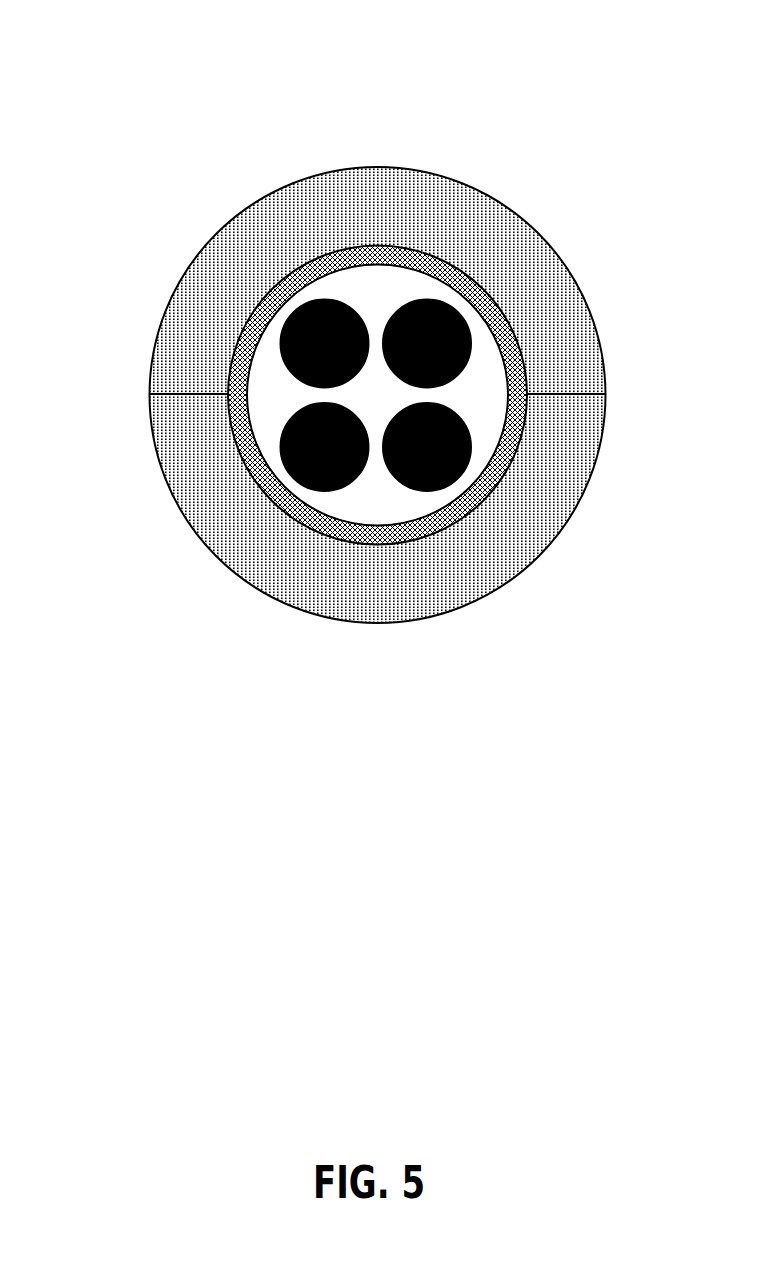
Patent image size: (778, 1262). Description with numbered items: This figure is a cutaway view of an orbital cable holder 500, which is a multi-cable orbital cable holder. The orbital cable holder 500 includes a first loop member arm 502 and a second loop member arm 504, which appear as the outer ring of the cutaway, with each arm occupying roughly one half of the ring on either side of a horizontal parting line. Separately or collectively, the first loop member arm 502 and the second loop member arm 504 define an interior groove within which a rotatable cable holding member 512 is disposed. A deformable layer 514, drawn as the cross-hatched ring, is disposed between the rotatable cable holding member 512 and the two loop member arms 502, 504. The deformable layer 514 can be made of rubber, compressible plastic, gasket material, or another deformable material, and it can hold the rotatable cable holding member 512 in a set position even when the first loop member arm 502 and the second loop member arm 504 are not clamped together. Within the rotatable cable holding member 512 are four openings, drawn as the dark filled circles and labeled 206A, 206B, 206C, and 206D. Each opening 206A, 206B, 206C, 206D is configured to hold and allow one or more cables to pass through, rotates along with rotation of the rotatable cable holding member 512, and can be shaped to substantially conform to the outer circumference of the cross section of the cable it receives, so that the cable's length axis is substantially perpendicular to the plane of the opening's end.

The orbital cable holder 500 is at (153, 93).
The first loop member arm 502 is at (508, 216).
The second loop member arm 504 is at (493, 583).
The deformable layer 514 is at (233, 342).
The rotatable cable holding member 512 is at (262, 432).
The conductor 206A is at (300, 306).
The conductor 206B is at (305, 487).
The conductor 206C is at (467, 463).
The conductor 206D is at (466, 325).